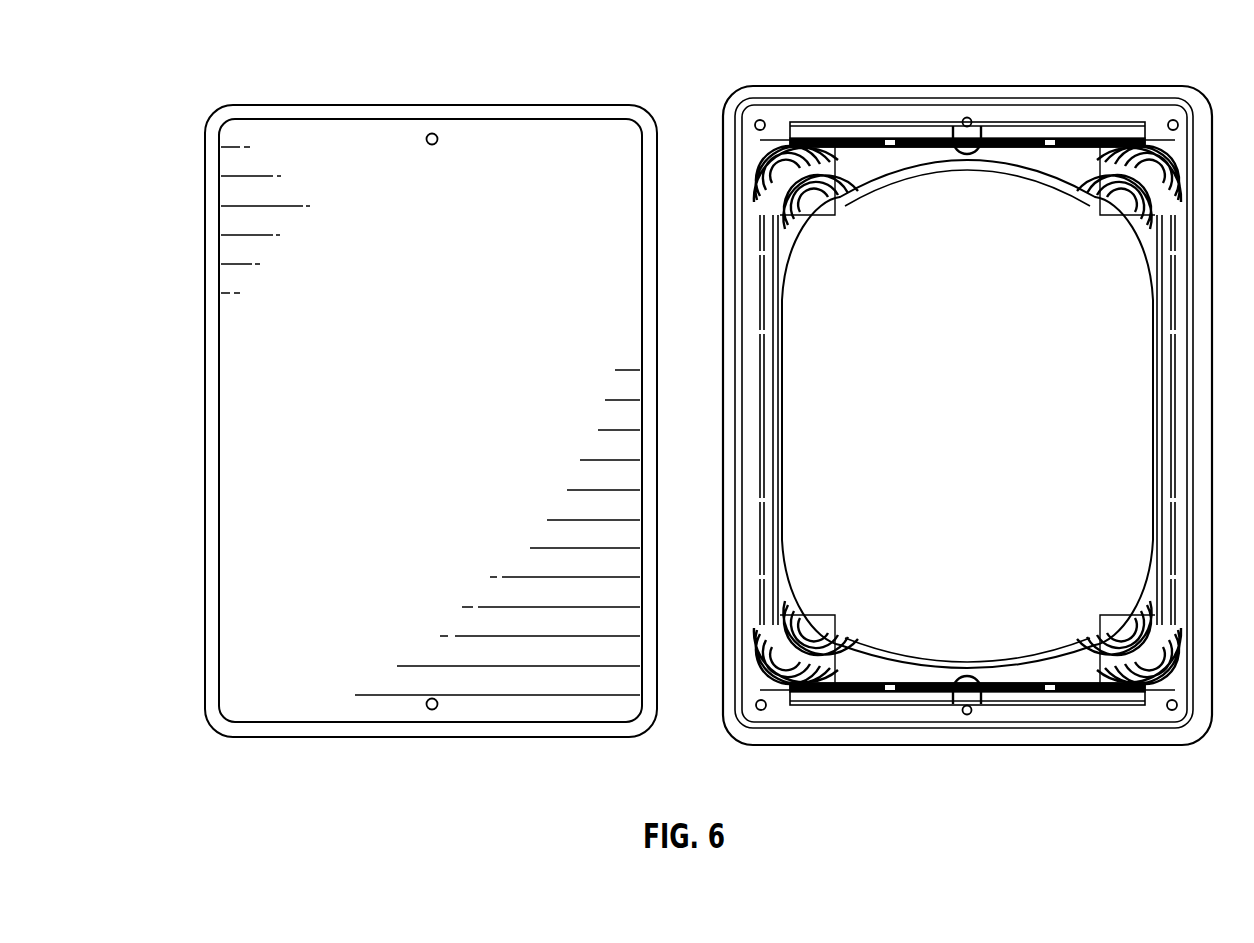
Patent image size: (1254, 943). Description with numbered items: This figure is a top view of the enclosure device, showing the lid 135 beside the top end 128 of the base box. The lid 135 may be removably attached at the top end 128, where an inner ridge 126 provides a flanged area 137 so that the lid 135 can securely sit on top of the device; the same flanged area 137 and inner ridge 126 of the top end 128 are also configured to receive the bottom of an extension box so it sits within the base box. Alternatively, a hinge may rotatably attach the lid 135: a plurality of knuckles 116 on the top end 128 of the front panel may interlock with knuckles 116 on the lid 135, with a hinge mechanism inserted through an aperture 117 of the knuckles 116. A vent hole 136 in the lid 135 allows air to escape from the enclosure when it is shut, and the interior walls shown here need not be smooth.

The side knuckles 116 is at (1122, 223).
The aperture 117 is at (1170, 709).
The inner ridge 126 is at (948, 110).
The top end 128 is at (942, 406).
The lid 135 is at (247, 370).
The vent hole 136 is at (431, 711).
The flanged area 137 is at (212, 558).